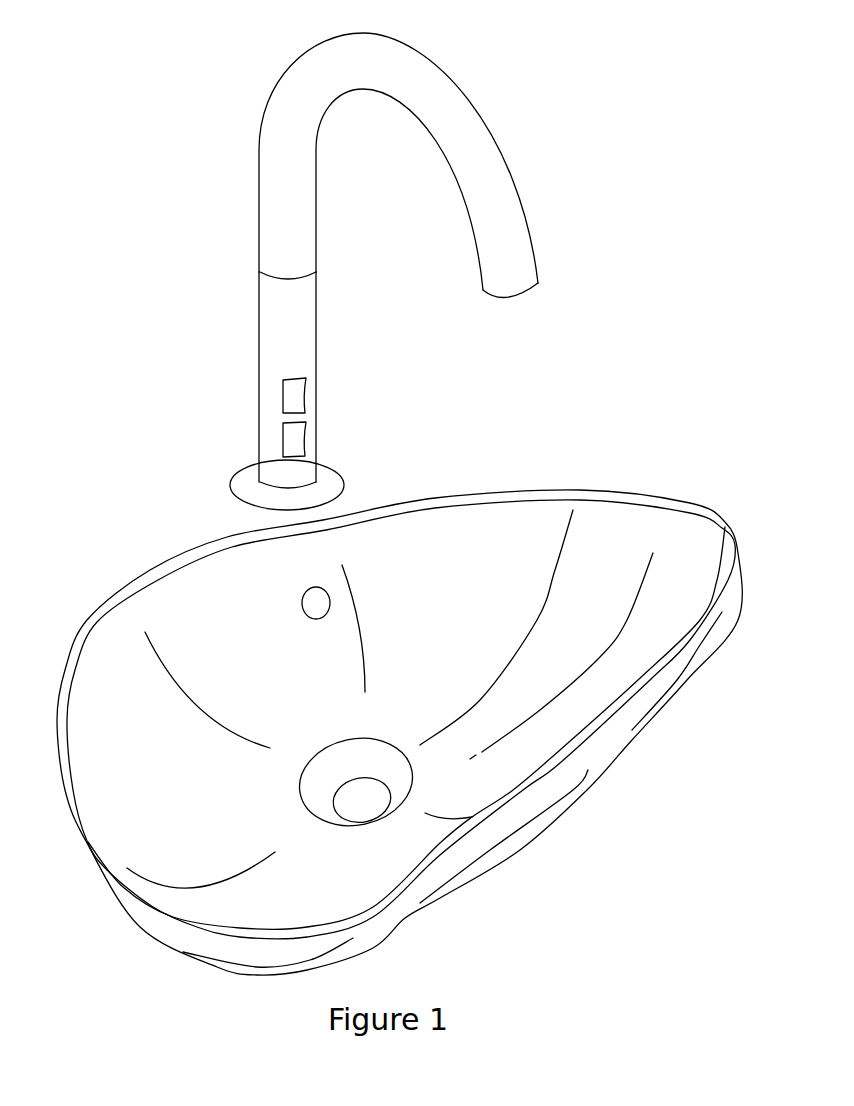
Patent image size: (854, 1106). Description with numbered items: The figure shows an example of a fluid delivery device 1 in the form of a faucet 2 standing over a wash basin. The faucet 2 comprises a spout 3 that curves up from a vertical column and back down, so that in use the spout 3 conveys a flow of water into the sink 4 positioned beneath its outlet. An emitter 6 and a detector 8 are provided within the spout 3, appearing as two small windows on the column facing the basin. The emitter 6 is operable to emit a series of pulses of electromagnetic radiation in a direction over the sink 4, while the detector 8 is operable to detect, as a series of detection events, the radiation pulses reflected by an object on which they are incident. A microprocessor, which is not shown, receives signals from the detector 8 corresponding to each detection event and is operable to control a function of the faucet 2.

The fluid delivery device 1 is at (407, 255).
The faucet 2 is at (433, 97).
The spout 3 is at (500, 207).
The sink 4 is at (620, 533).
The emitter 6 is at (296, 395).
The detector 8 is at (296, 438).